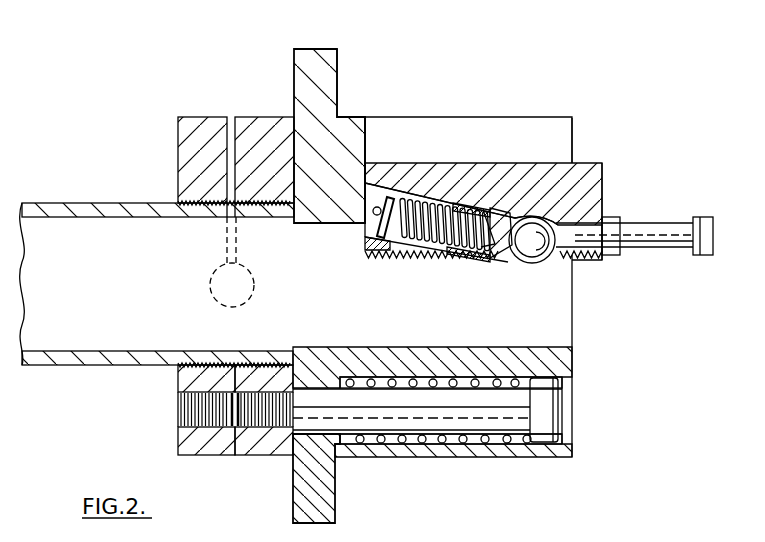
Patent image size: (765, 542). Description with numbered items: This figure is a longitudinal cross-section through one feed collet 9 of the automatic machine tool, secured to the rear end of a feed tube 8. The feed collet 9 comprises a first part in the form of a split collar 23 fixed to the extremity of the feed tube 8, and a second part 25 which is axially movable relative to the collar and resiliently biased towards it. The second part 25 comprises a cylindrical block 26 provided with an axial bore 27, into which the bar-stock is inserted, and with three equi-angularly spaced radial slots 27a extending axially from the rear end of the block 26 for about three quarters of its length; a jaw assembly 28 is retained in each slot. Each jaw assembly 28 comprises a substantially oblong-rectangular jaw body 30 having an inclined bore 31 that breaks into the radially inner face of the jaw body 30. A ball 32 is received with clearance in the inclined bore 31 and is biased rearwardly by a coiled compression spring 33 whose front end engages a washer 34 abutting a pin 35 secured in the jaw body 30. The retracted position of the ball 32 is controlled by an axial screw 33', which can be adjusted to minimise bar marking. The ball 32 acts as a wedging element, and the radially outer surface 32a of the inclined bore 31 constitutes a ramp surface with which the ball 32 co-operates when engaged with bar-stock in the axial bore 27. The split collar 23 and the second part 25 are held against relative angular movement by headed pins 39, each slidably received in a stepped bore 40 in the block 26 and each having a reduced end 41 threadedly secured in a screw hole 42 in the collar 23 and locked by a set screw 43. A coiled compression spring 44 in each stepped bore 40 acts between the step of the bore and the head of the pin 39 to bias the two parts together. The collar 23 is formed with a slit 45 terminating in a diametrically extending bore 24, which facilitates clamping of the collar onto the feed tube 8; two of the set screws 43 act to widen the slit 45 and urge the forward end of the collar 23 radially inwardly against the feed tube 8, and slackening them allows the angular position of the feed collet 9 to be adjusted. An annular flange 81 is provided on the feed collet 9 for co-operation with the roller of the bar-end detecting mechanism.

The feed tube 8 is at (91, 210).
The feed collet 9 is at (558, 461).
The split collar 23 is at (191, 127).
The diametrically extending bore 24 is at (208, 285).
The second part 25 is at (410, 112).
The cylindrical block 26 is at (352, 116).
The axial bore 27 is at (333, 224).
The radial slot 27a is at (563, 132).
The jaw assembly 28 is at (612, 176).
The jaw body 30 is at (583, 177).
The inclined bore 31 is at (517, 214).
The ball 32 is at (521, 263).
The radially outer surface of the bore 32a is at (418, 202).
The coiled compression spring 33 is at (445, 250).
The axial screw 33' is at (634, 217).
The washer 34 is at (375, 253).
The pin 35 is at (377, 206).
The headed pin 39 is at (380, 410).
The stepped bore 40 is at (415, 446).
The reduced end 41 is at (262, 448).
The screw hole 42 is at (206, 448).
The set screw 43 is at (195, 410).
The coiled compression spring 44 is at (466, 446).
The slit 45 is at (232, 130).
The annular flange 81 is at (320, 54).